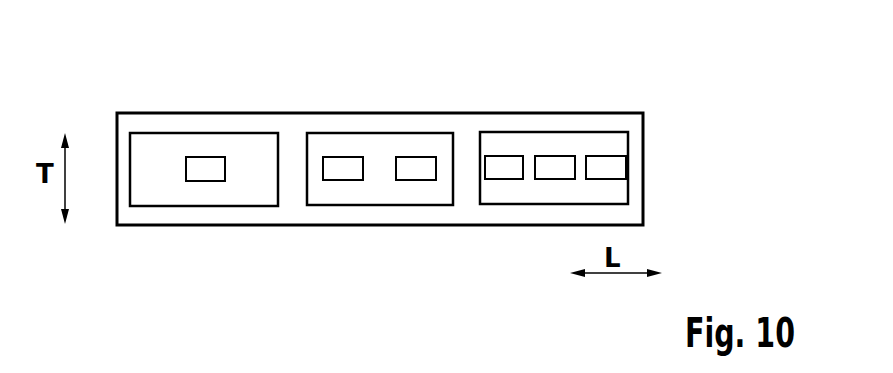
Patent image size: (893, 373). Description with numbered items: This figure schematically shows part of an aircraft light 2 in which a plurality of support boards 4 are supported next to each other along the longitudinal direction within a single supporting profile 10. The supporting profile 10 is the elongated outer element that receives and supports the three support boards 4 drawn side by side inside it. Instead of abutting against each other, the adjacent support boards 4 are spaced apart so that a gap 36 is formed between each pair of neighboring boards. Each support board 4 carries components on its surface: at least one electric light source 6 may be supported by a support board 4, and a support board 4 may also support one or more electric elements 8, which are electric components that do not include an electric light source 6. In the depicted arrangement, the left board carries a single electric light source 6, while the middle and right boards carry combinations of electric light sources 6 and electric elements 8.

The aircraft light 2 is at (700, 92).
The support board 4 is at (205, 203).
The electric light source 6 is at (203, 163).
The electric element 8 is at (413, 163).
The supporting profile 10 is at (643, 203).
The gap 36 is at (291, 210).